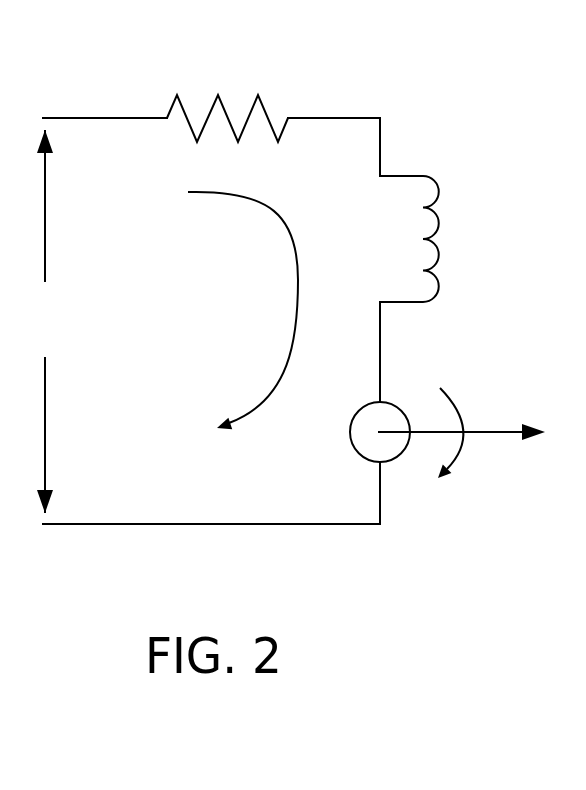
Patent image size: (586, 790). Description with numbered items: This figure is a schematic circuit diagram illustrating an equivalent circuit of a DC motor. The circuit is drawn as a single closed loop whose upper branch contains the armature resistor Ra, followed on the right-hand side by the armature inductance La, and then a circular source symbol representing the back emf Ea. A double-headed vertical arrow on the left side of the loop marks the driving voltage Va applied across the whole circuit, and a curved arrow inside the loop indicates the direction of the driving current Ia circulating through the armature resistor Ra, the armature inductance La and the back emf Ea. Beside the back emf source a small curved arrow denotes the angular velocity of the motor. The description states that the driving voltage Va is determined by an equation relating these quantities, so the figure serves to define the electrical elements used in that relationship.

The armature resistor Ra is at (227, 95).
The armature inductance La is at (437, 239).
The back emf Ea is at (422, 432).
The driving voltage Va is at (48, 321).
The driving current Ia is at (243, 310).